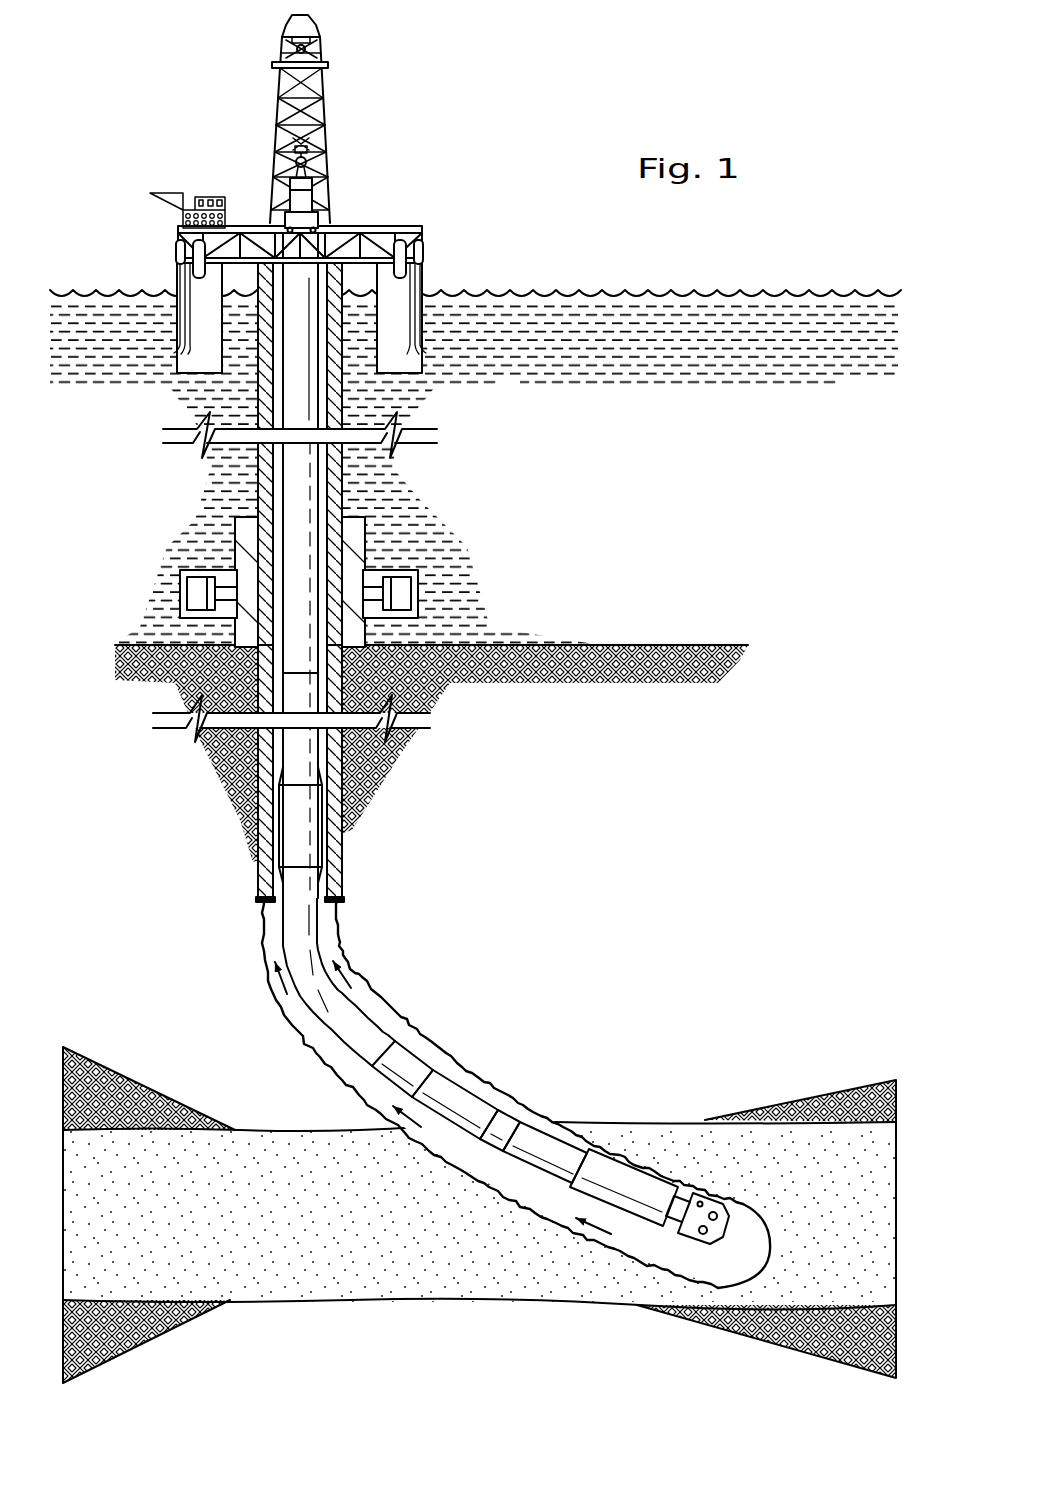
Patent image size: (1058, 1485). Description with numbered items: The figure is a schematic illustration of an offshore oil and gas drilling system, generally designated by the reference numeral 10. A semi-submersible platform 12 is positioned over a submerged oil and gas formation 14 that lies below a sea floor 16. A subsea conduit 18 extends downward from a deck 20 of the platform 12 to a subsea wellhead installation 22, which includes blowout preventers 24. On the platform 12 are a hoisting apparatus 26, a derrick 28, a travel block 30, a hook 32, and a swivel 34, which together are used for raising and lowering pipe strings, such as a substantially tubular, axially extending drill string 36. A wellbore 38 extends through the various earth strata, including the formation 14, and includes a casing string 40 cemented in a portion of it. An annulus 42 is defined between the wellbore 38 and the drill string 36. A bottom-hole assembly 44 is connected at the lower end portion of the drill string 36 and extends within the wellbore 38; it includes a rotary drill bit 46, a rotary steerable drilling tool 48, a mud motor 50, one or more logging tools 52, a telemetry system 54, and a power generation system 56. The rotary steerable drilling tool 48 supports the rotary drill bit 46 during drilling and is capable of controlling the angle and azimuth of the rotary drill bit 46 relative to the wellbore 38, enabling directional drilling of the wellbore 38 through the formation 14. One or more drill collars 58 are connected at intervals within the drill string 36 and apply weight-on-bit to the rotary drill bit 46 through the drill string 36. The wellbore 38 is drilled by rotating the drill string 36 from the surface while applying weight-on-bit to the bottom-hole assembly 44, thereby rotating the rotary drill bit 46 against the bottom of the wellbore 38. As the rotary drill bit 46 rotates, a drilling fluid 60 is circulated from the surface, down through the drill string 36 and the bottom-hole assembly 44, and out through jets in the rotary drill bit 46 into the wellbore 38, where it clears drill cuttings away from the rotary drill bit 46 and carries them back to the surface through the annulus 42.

The offshore oil and gas platform system 10 is at (400, 118).
The semi-submersible platform 12 is at (405, 228).
The oil and gas formation 14 is at (210, 1222).
The sea floor 16 is at (722, 645).
The subsea conduit 18 is at (350, 380).
The deck 20 is at (425, 263).
The subsea wellhead installation 22 is at (238, 540).
The blowout preventers 24 is at (405, 587).
The hoisting apparatus 26 is at (322, 213).
The derrick 28 is at (283, 45).
The travel block 30 is at (295, 143).
The hook 32 is at (288, 165).
The swivel 34 is at (312, 185).
The drill string 36 is at (318, 962).
The wellbore 38 is at (340, 912).
The casing string 40 is at (335, 852).
The annulus 42 is at (330, 1050).
The bottom-hole assembly 44 is at (575, 1120).
The rotary drill bit 46 is at (745, 1212).
The rotary steerable drilling tool 48 is at (612, 1170).
The mud motor 50 is at (535, 1120).
The logging tools 52 is at (490, 1095).
The telemetry system 54 is at (452, 1075).
The power generation system 56 is at (422, 1045).
The drill collars 58 is at (290, 858).
The drilling fluid 60 is at (366, 1005).